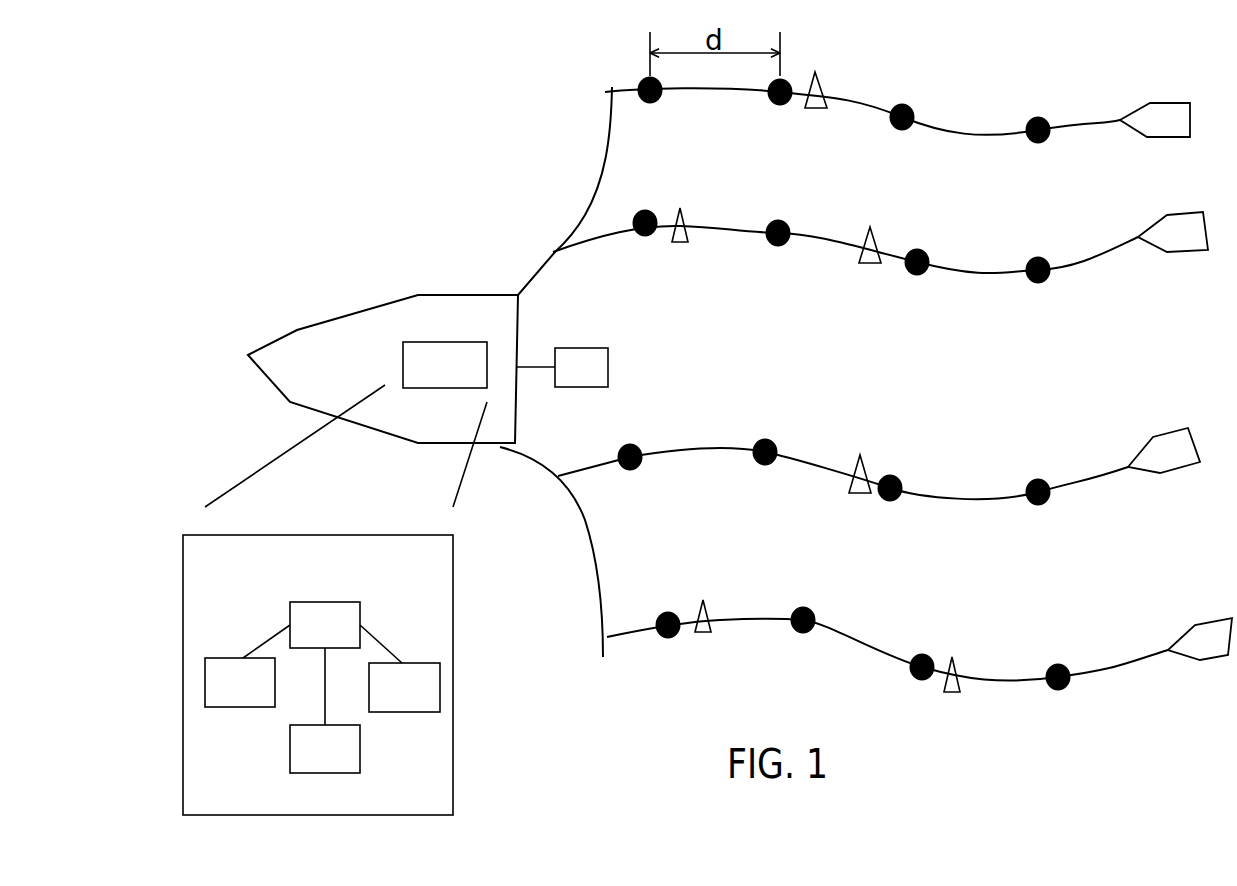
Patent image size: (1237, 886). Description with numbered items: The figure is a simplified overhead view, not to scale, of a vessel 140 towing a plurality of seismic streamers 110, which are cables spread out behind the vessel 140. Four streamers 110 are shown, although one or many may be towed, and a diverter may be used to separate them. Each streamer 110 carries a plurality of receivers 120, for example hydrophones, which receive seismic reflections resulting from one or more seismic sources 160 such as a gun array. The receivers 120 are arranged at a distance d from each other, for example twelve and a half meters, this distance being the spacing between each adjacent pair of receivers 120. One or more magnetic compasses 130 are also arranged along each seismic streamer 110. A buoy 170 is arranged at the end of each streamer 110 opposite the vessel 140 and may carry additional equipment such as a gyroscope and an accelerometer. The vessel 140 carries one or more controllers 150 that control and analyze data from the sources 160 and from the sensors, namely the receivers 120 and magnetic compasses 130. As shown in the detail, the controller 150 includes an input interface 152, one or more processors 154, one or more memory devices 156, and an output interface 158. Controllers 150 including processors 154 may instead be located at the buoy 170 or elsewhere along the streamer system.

The seismic streamer 110 is at (739, 223).
The receiver 120 is at (1027, 480).
The magnetic compass 130 is at (825, 117).
The vessel 140 is at (322, 320).
The controller 150 is at (437, 342).
The input interface 152 is at (240, 682).
The processor 154 is at (322, 663).
The memory device 156 is at (325, 749).
The output interface 158 is at (404, 687).
The seismic source 160 is at (583, 348).
The buoy 170 is at (1163, 278).